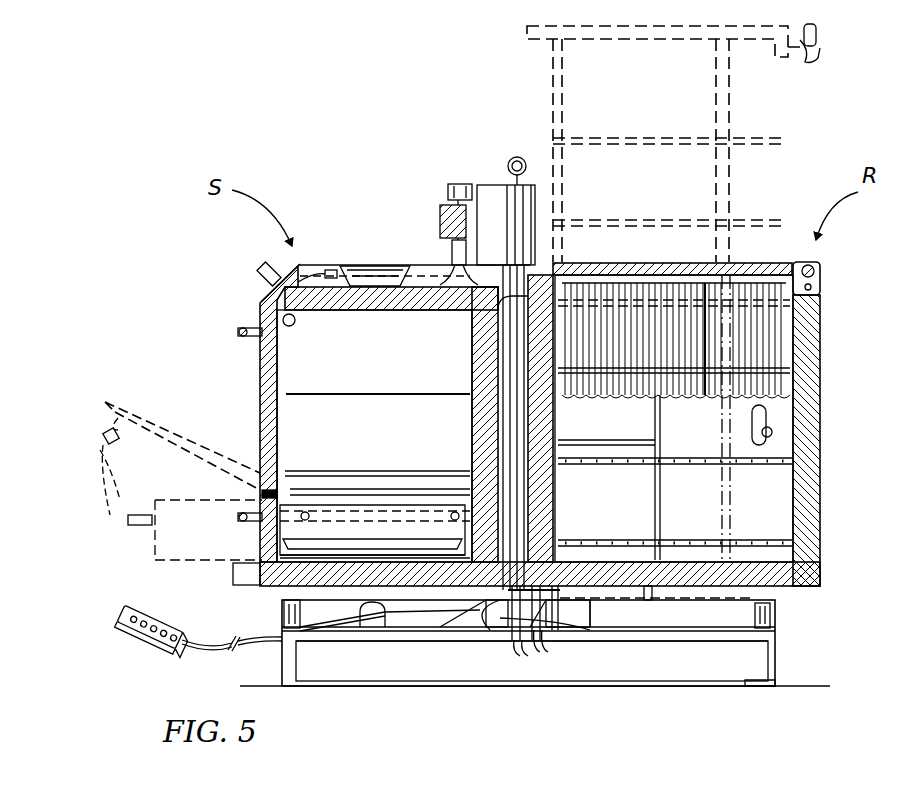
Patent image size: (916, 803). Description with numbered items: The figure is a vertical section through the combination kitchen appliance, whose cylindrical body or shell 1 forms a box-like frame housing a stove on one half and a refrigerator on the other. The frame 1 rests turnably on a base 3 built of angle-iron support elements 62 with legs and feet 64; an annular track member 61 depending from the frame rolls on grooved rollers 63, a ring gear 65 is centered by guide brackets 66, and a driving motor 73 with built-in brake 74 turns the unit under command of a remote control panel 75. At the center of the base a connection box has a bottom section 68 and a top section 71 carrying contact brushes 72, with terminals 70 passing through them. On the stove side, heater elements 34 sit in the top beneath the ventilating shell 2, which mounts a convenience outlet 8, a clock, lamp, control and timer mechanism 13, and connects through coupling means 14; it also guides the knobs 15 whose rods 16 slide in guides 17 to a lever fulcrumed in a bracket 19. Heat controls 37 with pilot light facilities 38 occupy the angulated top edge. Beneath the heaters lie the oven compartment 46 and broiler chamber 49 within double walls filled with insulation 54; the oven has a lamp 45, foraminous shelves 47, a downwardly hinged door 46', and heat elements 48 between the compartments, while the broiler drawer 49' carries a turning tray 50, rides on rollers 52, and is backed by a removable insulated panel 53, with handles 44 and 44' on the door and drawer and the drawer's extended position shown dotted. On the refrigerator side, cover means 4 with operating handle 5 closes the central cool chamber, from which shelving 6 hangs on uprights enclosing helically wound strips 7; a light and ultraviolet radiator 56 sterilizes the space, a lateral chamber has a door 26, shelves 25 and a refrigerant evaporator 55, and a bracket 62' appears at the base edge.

The body or shell 1 is at (821, 418).
The ventilating shell 2 is at (492, 200).
The base 3 is at (776, 636).
The cover means 4 is at (672, 262).
The operating handle 5 is at (818, 266).
The shelving 6 is at (708, 556).
The helically wound strip 7 is at (558, 494).
The electrical convenience outlet 8 is at (462, 182).
The clock, lamps, temperature controls and timer mechanism 13 is at (440, 218).
The electrical coupling means 14 is at (452, 252).
The knob 15 is at (522, 157).
The rod 16 is at (505, 352).
The guide 17 is at (500, 318).
The bracket 19 is at (558, 516).
The shelf 25 is at (628, 442).
The door 26 is at (686, 500).
The heater element 34 is at (380, 262).
The heat control 37 is at (270, 265).
The pilot light facilities 38 is at (265, 290).
The handle 44 is at (236, 420).
The pin 44' is at (107, 471).
The lamp 45 is at (295, 324).
The oven compartment 46 is at (342, 436).
The oven door 46' is at (183, 431).
The foraminous shelf 47 is at (300, 396).
The heat element 48 is at (380, 485).
The broiler chamber 49 is at (347, 544).
The drawer 49' is at (180, 542).
The tray 50 is at (420, 542).
The roller 52 is at (305, 524).
The removable insulated panel 53 is at (456, 521).
The insulation 54 is at (335, 298).
The refrigerant evaporator 55 is at (668, 378).
The automatic light and ultraviolet radiator 56 is at (752, 436).
The annular track member 61 is at (720, 598).
The structural support element 62 is at (532, 651).
The bracket 62' is at (266, 612).
The grooved roller 63 is at (755, 612).
The leg and foot 64 is at (754, 680).
The ring gear 65 is at (652, 592).
The guide bracket 66 is at (596, 614).
The connection box bottom section 68 is at (512, 638).
The terminal 70 is at (518, 656).
The connection box top section 71 is at (550, 614).
The contact brush 72 is at (490, 618).
The driving motor 73 is at (392, 626).
The brake 74 is at (378, 603).
The remote control panel 75 is at (142, 645).